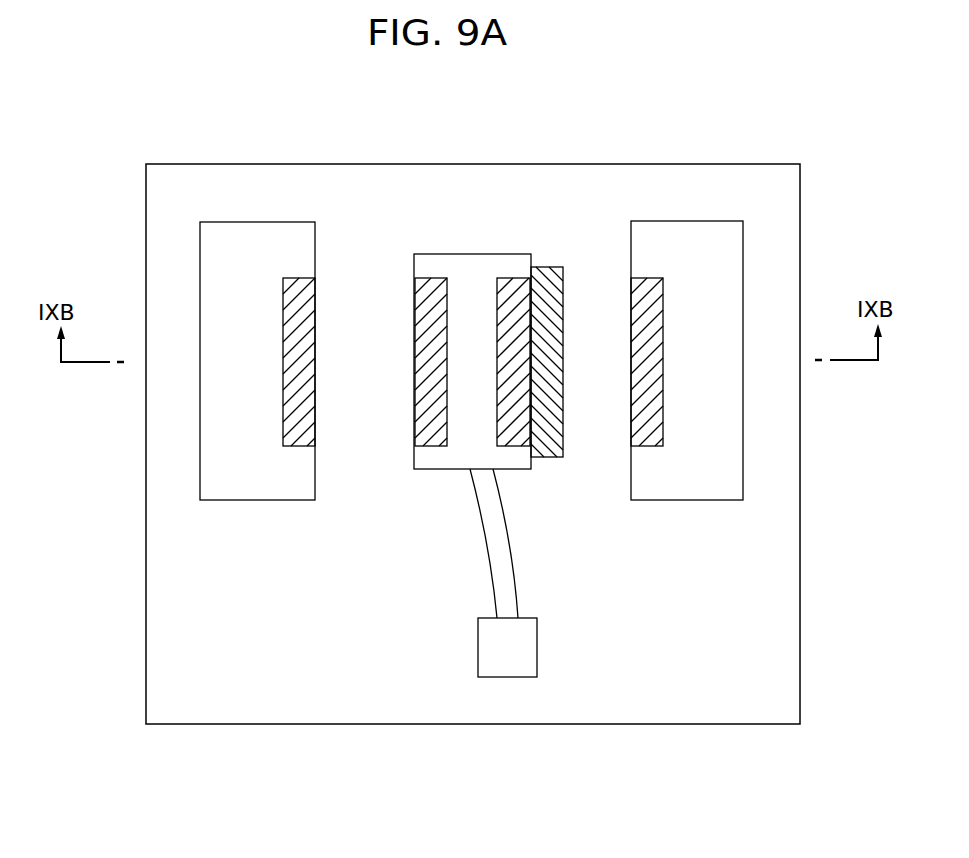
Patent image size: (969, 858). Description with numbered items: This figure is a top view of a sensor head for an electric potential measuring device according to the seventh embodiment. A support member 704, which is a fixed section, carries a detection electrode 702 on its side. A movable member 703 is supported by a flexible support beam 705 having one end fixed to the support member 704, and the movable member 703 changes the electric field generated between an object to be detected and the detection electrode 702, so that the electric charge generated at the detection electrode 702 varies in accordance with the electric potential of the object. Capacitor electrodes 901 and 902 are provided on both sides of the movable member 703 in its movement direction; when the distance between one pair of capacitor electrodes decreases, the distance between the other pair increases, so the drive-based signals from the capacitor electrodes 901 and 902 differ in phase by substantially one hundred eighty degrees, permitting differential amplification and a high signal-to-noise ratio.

The capacitor electrodes 901 is at (291, 287).
The capacitor electrodes 902 is at (514, 292).
The movable member 703 is at (449, 264).
The detection electrode 702 is at (557, 450).
The support member 704 is at (705, 698).
The flexible support beam 705 is at (495, 540).